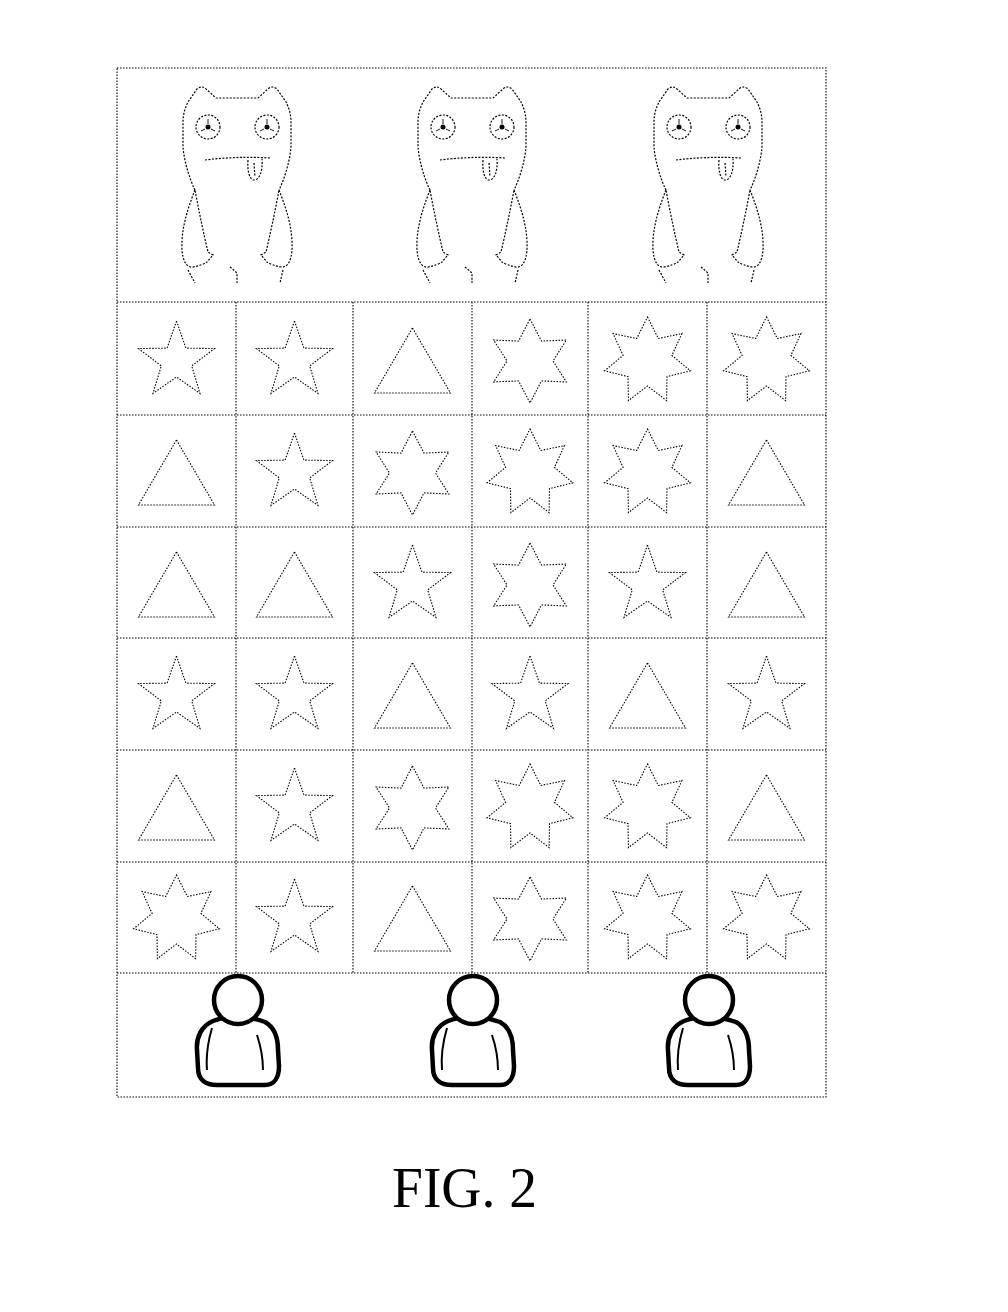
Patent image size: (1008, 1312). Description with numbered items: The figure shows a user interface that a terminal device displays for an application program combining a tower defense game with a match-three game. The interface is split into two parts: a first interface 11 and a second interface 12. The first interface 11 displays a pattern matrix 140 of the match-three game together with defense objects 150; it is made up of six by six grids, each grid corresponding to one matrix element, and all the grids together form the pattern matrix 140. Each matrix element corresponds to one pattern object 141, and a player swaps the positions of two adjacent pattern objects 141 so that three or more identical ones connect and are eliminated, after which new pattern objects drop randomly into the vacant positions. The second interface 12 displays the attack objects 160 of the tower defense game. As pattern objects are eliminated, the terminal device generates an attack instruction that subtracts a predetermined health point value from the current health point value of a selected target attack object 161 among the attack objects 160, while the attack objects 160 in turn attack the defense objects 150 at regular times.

The first interface 11 is at (826, 1008).
The second interface 12 is at (827, 182).
The pattern matrix 140 is at (812, 557).
The pattern object 141 is at (165, 593).
The defense object 150 is at (195, 1037).
The attack object 160 is at (182, 118).
The target attack object 161 is at (712, 120).